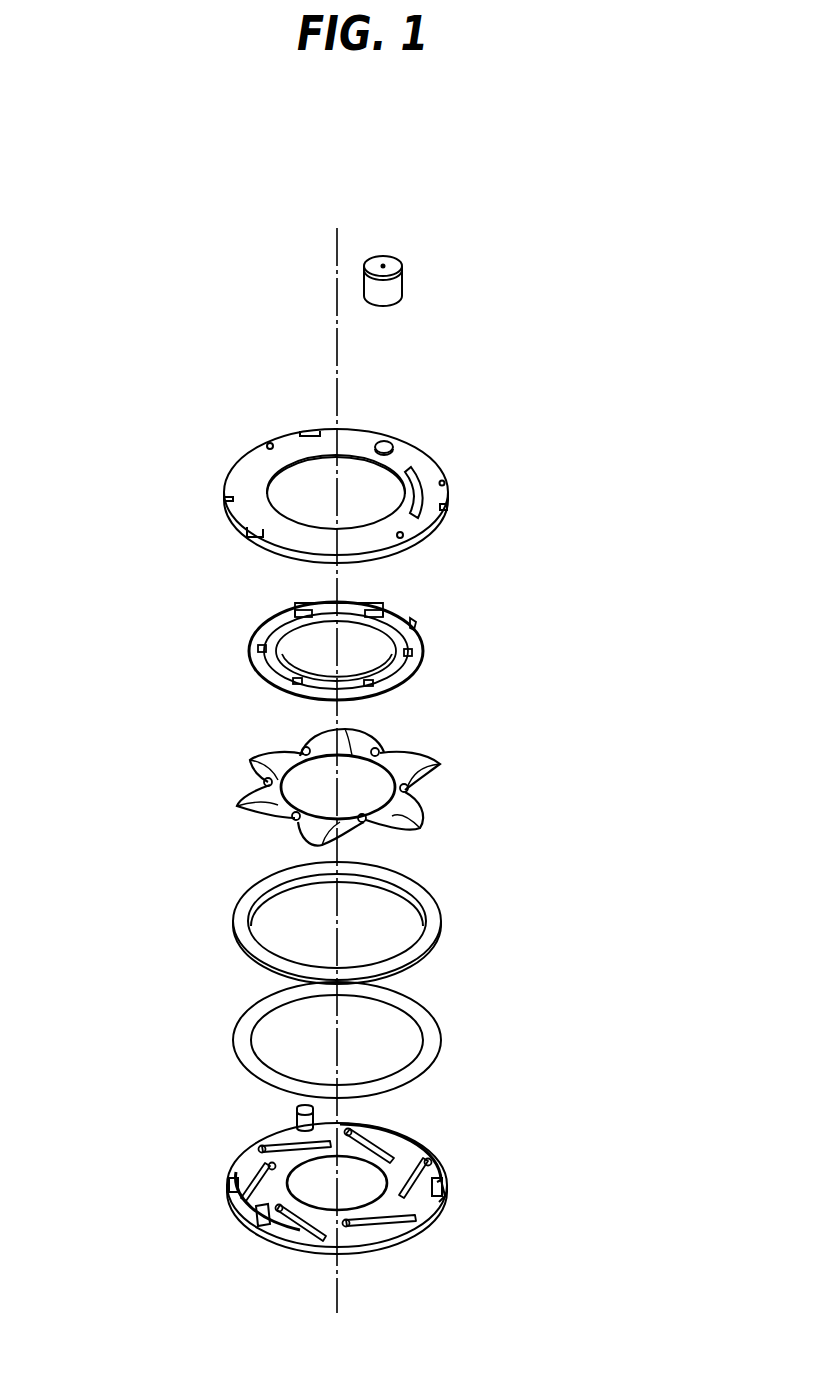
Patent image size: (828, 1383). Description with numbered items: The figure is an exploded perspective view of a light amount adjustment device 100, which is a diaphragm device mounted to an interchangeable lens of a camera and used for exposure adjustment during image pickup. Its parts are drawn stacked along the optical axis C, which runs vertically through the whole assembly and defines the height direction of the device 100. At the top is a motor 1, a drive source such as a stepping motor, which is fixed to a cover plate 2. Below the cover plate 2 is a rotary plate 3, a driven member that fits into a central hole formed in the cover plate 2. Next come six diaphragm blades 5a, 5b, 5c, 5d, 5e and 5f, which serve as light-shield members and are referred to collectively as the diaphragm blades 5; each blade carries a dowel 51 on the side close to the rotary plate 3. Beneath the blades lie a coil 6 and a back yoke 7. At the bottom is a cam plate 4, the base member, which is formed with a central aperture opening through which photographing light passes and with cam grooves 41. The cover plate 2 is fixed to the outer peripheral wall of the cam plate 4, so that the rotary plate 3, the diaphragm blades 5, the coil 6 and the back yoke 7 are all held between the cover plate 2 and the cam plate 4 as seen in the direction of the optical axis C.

The light amount adjustment device 100 is at (165, 264).
The optical axis C is at (338, 243).
The motor 1 is at (397, 291).
The cover plate 2 is at (436, 462).
The rotary plate 3 is at (425, 642).
The diaphragm blades 5 is at (378, 777).
The diaphragm blade 5a is at (418, 762).
The diaphragm blade 5b is at (414, 826).
The diaphragm blade 5c is at (372, 838).
The diaphragm blade 5d is at (240, 805).
The diaphragm blade 5e is at (262, 762).
The diaphragm blade 5f is at (332, 747).
The dowels 51 is at (183, 795).
The coil 6 is at (438, 948).
The back yoke 7 is at (435, 1058).
The cam plate 4 is at (465, 1195).
The cam grooves 41 is at (266, 1148).